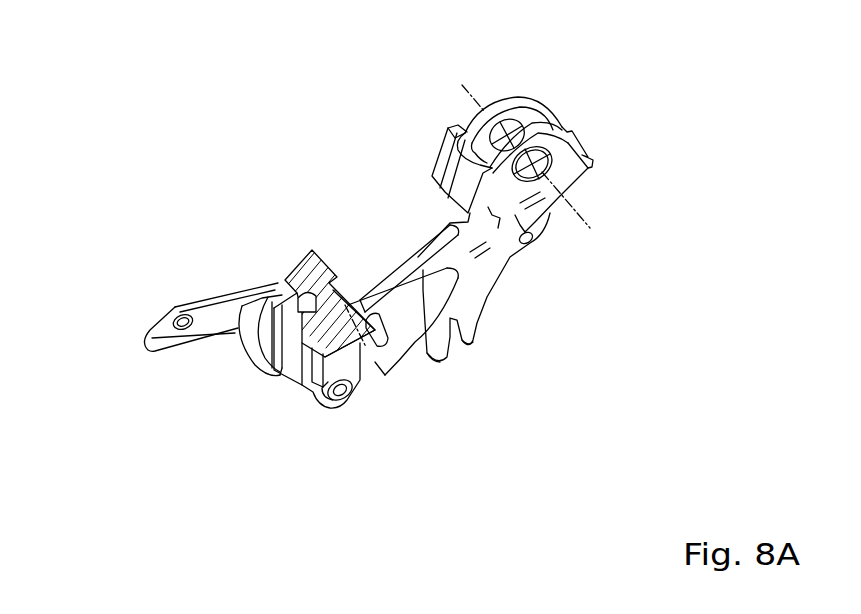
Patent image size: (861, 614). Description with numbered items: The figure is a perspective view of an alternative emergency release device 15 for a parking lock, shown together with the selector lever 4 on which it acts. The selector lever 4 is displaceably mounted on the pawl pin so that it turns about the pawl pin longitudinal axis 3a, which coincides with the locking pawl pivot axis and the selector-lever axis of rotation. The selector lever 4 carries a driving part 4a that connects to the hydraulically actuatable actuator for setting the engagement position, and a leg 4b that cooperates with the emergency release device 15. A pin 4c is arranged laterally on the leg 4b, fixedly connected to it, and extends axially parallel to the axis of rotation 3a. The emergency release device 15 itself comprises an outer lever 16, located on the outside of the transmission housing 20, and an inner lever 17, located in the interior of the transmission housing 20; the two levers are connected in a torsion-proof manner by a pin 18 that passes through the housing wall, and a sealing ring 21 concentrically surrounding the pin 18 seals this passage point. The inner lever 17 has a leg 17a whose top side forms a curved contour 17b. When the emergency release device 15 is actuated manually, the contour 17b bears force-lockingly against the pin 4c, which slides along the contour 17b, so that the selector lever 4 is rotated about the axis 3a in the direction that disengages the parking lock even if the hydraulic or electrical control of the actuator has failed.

The emergency release device 15 is at (243, 245).
The pawl pin longitudinal axis 3a is at (485, 118).
The selector lever 4 is at (487, 260).
The driving part 4a is at (473, 343).
The leg 4b is at (388, 312).
The pin 4c is at (397, 350).
The transmission housing 20 is at (300, 258).
The inner lever 17 is at (280, 372).
The leg 17a is at (380, 360).
The curved contour 17b is at (410, 297).
The pin 18 is at (342, 393).
The outer lever 16 is at (162, 347).
The sealing ring 21 is at (255, 338).